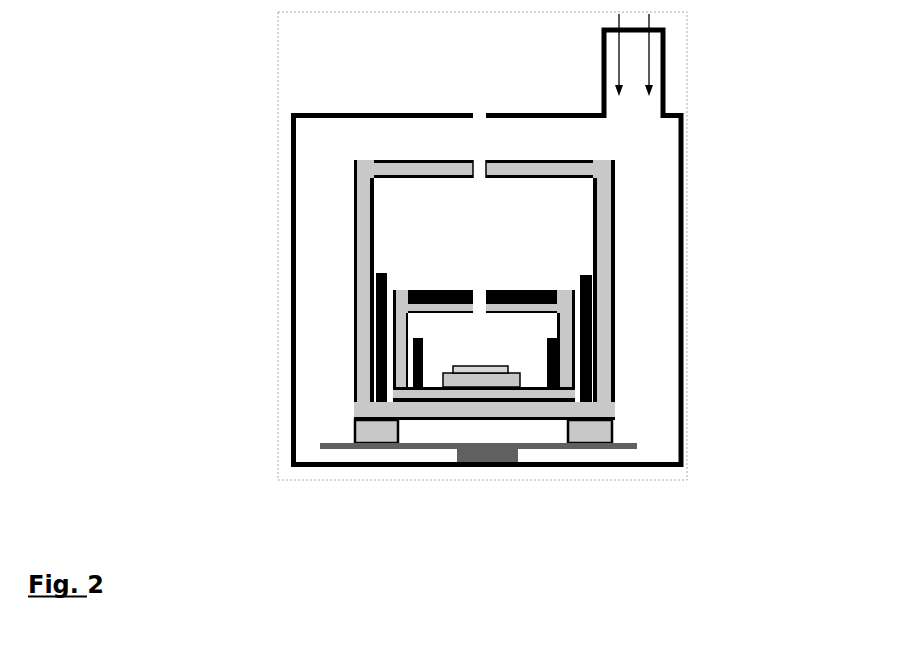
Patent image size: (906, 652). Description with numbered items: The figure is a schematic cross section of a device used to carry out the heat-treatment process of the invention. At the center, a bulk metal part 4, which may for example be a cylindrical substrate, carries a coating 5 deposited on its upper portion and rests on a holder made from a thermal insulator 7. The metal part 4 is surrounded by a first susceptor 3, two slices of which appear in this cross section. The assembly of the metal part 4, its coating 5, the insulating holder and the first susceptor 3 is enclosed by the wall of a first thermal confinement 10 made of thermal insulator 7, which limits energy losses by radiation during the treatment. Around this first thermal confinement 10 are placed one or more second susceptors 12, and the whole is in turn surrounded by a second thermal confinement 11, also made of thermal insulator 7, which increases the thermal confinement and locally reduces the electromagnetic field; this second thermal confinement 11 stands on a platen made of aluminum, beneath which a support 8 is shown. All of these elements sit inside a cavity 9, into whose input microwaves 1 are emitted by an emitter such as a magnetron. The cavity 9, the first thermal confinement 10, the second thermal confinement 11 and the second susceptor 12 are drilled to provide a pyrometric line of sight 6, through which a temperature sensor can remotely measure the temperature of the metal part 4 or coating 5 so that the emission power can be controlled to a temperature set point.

The microwaves 1 is at (648, 62).
The first susceptor 3 is at (557, 356).
The bulk metal part 4 is at (493, 377).
The coating 5 is at (468, 369).
The pyrometric line of sight 6 is at (480, 115).
The thermal insulator 7 is at (373, 428).
The pedestal 8 is at (482, 455).
The cavity 9 is at (323, 115).
The first thermal confinement 10 is at (400, 353).
The second thermal confinement 11 is at (365, 210).
The second susceptor 12 is at (370, 308).